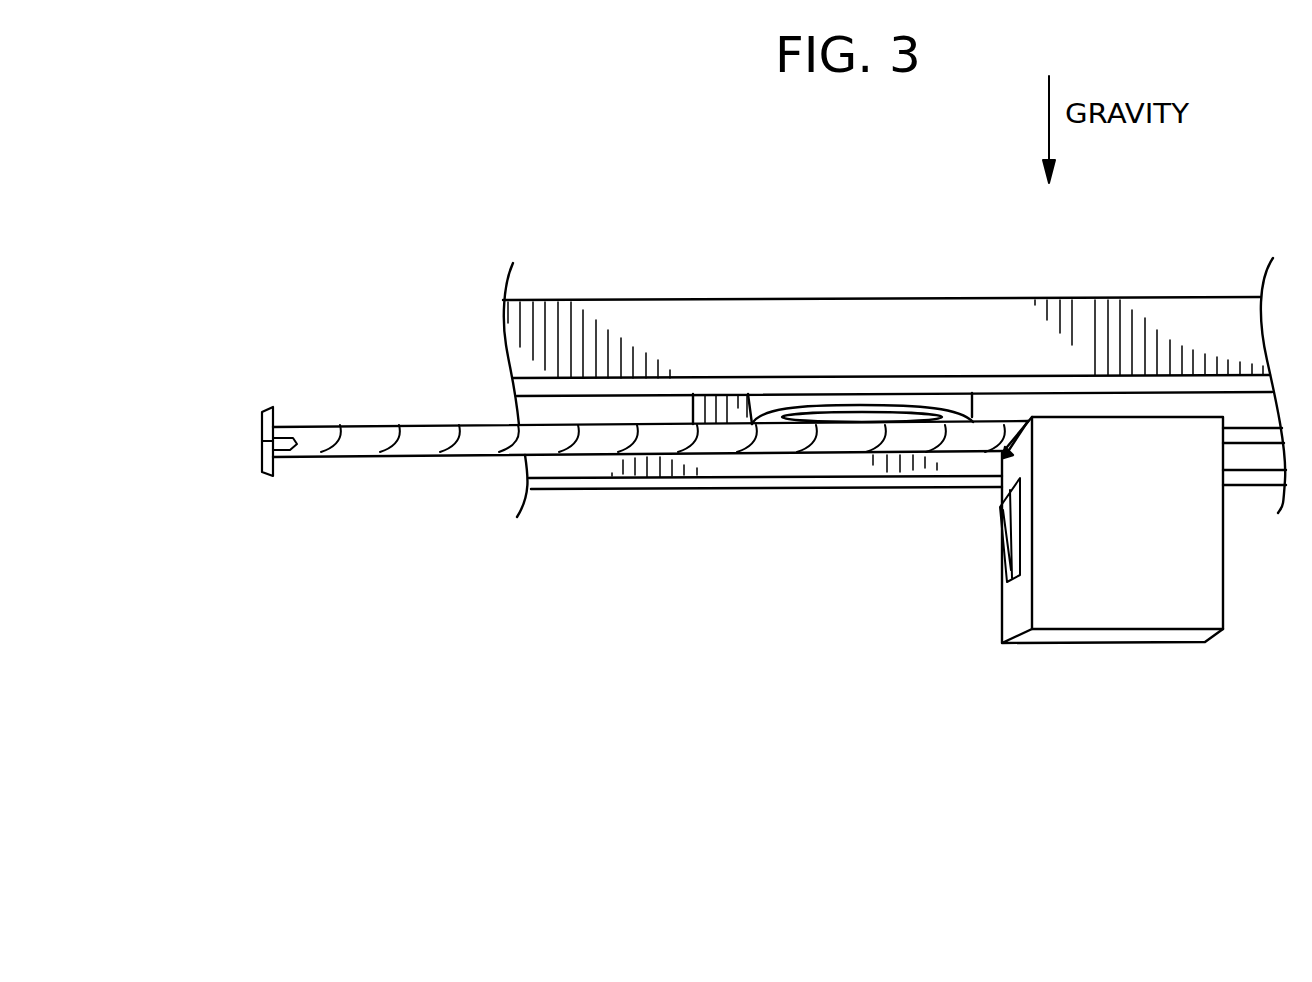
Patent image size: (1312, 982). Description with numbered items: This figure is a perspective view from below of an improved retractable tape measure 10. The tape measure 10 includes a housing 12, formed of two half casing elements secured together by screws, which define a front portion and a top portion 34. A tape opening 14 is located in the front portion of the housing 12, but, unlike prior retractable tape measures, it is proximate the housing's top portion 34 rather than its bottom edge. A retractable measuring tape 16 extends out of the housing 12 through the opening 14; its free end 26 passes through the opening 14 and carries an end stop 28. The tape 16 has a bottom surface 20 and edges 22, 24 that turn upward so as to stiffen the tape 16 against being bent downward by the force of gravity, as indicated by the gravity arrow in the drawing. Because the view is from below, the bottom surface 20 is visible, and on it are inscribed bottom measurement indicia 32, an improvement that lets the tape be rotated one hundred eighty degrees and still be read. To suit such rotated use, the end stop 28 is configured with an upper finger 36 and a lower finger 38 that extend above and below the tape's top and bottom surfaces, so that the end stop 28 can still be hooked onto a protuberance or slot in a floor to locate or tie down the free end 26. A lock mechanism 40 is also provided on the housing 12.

The tape measure 10 is at (1105, 587).
The housing 12 is at (1197, 597).
The tape opening 14 is at (1000, 455).
The retractable measuring tape 16 is at (650, 466).
The bottom surface 20 is at (710, 453).
The edge 22 is at (398, 427).
The edge 24 is at (337, 460).
The free end 26 is at (249, 424).
The end stop 28 is at (268, 443).
The bottom measurement indicia 32 is at (620, 453).
The top portion 34 is at (1063, 432).
The upper finger 36 is at (272, 412).
The lower finger 38 is at (267, 473).
The lock mechanism 40 is at (1005, 565).